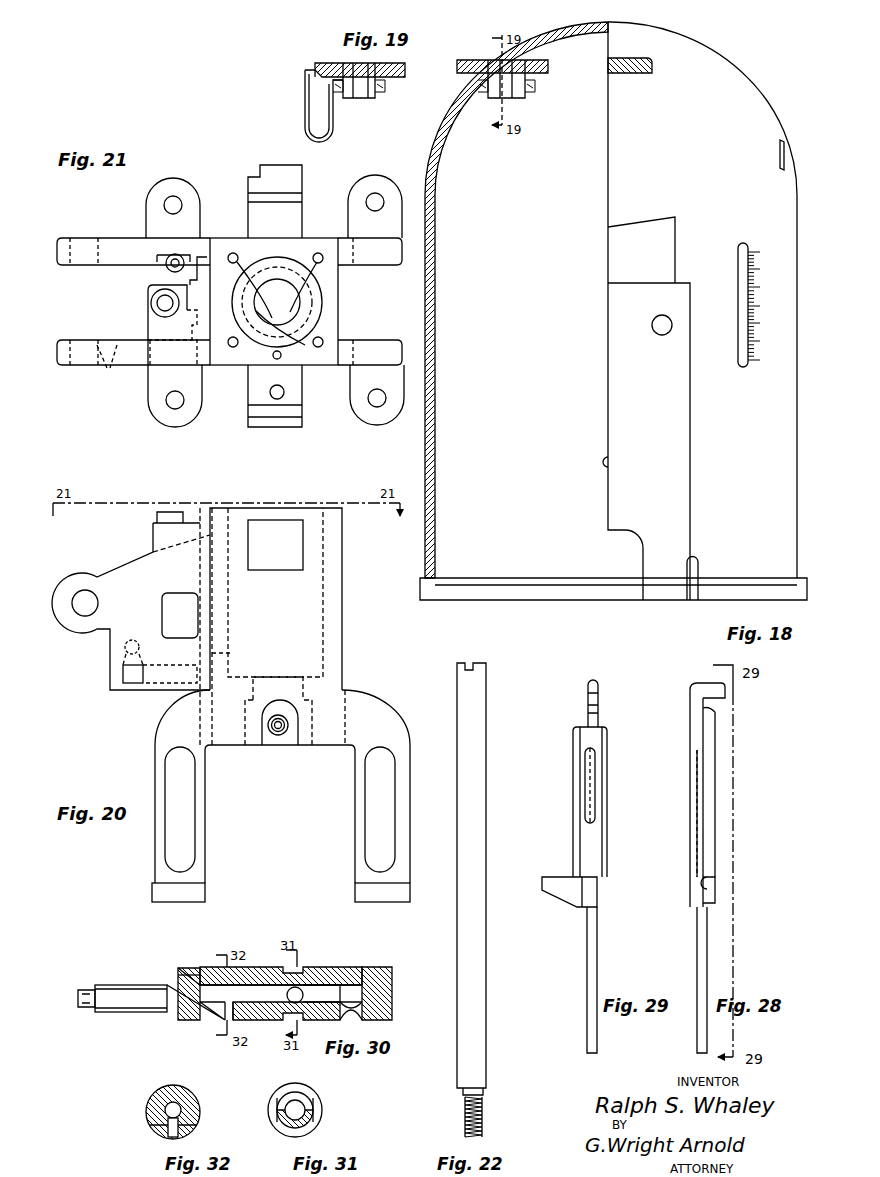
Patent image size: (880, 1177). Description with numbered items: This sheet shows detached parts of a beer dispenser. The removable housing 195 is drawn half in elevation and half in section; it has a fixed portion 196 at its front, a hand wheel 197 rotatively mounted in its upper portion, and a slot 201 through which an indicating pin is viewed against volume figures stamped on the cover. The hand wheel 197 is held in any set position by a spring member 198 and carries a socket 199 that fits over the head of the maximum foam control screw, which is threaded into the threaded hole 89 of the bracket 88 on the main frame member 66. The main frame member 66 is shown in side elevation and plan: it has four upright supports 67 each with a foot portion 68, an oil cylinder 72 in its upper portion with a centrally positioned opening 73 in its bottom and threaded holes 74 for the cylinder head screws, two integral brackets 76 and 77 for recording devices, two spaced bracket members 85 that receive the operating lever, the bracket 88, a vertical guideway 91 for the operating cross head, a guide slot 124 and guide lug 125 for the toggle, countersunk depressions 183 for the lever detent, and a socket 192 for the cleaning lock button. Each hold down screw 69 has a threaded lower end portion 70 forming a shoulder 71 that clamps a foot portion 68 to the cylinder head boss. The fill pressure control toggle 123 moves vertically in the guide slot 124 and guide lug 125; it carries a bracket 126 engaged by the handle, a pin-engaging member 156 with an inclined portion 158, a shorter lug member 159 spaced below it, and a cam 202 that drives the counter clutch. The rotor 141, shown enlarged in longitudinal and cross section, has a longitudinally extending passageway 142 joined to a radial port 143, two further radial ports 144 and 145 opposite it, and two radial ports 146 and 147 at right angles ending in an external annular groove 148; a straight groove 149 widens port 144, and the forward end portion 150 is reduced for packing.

In FIG. 21, the main frame member 66 is at (222, 162).
In FIG. 20, the main frame member 66 is at (350, 656).
In FIG. 21, the upright supports 67 is at (380, 268).
In FIG. 20, the upright supports 67 is at (360, 852).
In FIG. 21, the foot portion 68 is at (198, 204).
In FIG. 20, the foot portion 68 is at (365, 890).
In FIG. 22, the hold down screw 69 is at (483, 860).
In FIG. 22, the threaded lower end portion 70 is at (485, 1118).
In FIG. 22, the shoulder 71 is at (480, 1088).
In FIG. 21, the oil cylinder 72 is at (318, 300).
In FIG. 20, the oil cylinder 72 is at (315, 624).
In FIG. 21, the centrally positioned opening 73 is at (285, 292).
In FIG. 20, the centrally positioned opening 73 is at (283, 680).
In FIG. 21, the threaded holes 74 is at (277, 303).
In FIG. 21, the bracket 76 is at (250, 217).
In FIG. 21, the bracket 77 is at (250, 394).
In FIG. 20, the bracket 77 is at (280, 568).
In FIG. 21, the bracket members 85 is at (66, 268).
In FIG. 20, the bracket members 85 is at (108, 572).
In FIG. 21, the bracket 88 is at (148, 326).
In FIG. 20, the bracket 88 is at (157, 520).
In FIG. 21, the threaded hole 89 is at (152, 304).
In FIG. 21, the vertical guideway 91 is at (196, 278).
In FIG. 20, the vertical guideway 91 is at (234, 651).
In FIG. 29, the fill pressure control toggle 123 is at (590, 858).
In FIG. 28, the fill pressure control toggle 123 is at (703, 845).
In FIG. 21, the guide slot 124 is at (180, 255).
In FIG. 21, the guide lug 125 is at (168, 256).
In FIG. 29, the bracket 126 is at (556, 892).
In FIG. 28, the bracket 126 is at (715, 884).
In FIG. 30, the rotor 141 is at (392, 974).
In FIG. 32, the rotor 141 is at (190, 1100).
In FIG. 31, the rotor 141 is at (308, 1092).
In FIG. 30, the longitudinally extending passageway 142 is at (352, 1008).
In FIG. 32, the longitudinally extending passageway 142 is at (164, 1114).
In FIG. 31, the longitudinally extending passageway 142 is at (300, 1104).
In FIG. 30, the radial port 143 is at (192, 978).
In FIG. 30, the radial port 144 is at (200, 1020).
In FIG. 32, the radial port 144 is at (152, 1128).
In FIG. 30, the radial port 145 is at (385, 970).
In FIG. 30, the radial port 146 is at (325, 992).
In FIG. 31, the radial port 146 is at (306, 1108).
In FIG. 31, the radial port 147 is at (282, 1112).
In FIG. 30, the external annular groove 148 is at (298, 988).
In FIG. 31, the external annular groove 148 is at (312, 1120).
In FIG. 30, the straight groove 149 is at (225, 1012).
In FIG. 32, the straight groove 149 is at (170, 1136).
In FIG. 30, the forward end portion 150 is at (128, 990).
In FIG. 29, the pin-engaging member 156 is at (598, 689).
In FIG. 28, the pin-engaging member 156 is at (700, 682).
In FIG. 28, the inclined portion 158 is at (725, 698).
In FIG. 29, the lug member 159 is at (598, 711).
In FIG. 28, the lug member 159 is at (715, 712).
In FIG. 21, the countersunk depressions 183 is at (106, 370).
In FIG. 20, the countersunk depressions 183 is at (128, 640).
In FIG. 20, the socket 192 is at (138, 684).
In FIG. 18, the housing 195 is at (768, 108).
In FIG. 18, the fixed portion 196 is at (612, 360).
In FIG. 19, the hand wheel 197 is at (380, 82).
In FIG. 18, the hand wheel 197 is at (540, 68).
In FIG. 19, the spring member 198 is at (305, 104).
In FIG. 19, the socket 199 is at (362, 96).
In FIG. 18, the socket 199 is at (510, 92).
In FIG. 18, the slot 201 is at (735, 320).
In FIG. 29, the cam 202 is at (607, 798).